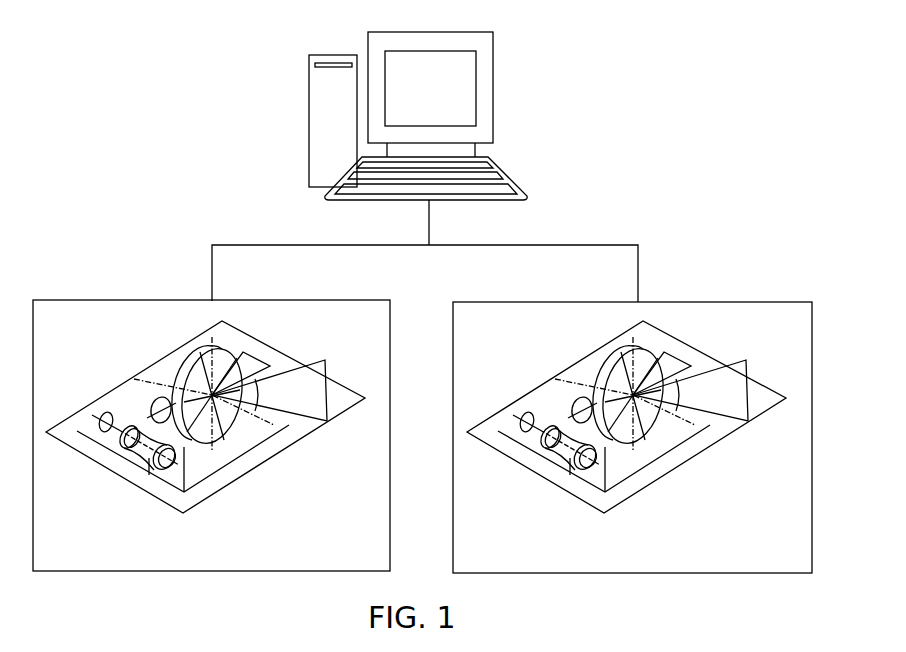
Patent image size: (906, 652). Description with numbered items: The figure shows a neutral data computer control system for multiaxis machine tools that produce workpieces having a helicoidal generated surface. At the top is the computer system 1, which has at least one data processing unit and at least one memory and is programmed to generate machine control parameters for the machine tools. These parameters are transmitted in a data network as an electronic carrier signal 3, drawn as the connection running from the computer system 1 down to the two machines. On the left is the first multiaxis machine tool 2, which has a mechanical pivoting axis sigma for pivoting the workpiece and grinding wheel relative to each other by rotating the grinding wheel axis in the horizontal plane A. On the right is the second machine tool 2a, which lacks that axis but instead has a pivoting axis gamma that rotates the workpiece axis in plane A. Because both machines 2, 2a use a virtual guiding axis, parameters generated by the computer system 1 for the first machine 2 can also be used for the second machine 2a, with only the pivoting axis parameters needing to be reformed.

The computer system 1 is at (467, 32).
The electronic carrier signal 3 is at (598, 245).
The first multiaxis machine tool 2 is at (322, 555).
The second multiaxis machine tool 2a is at (763, 557).